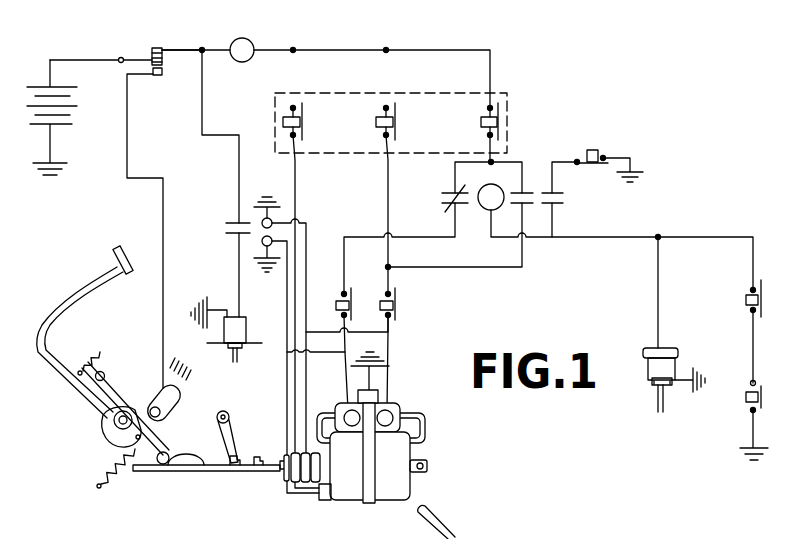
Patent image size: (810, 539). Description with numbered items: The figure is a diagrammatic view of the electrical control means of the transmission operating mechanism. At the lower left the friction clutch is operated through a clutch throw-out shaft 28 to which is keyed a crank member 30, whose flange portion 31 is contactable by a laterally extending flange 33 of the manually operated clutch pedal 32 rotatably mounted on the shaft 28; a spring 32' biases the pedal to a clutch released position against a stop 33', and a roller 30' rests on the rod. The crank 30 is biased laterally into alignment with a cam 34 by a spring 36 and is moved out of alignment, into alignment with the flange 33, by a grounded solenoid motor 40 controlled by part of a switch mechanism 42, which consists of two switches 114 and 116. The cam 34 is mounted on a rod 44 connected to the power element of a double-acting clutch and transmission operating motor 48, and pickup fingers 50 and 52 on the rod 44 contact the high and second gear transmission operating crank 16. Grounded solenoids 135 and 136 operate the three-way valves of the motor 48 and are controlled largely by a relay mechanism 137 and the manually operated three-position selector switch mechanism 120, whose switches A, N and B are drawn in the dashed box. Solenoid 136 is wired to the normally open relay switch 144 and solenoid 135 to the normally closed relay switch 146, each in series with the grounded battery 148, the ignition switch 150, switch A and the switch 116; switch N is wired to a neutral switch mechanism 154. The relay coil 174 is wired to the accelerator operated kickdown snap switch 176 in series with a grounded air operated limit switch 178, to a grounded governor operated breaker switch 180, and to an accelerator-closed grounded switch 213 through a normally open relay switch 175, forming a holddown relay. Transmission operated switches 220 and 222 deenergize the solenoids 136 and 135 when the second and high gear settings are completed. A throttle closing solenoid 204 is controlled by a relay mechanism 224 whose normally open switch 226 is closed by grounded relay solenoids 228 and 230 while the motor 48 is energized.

The grounded battery 148 is at (24, 88).
The breaker switch 116 is at (152, 50).
The switch mechanism 42 is at (170, 55).
The switch 114 is at (162, 73).
The ignition switch 150 is at (253, 40).
The selector switch mechanism 120 is at (432, 96).
The relay mechanism 137 is at (531, 183).
The grounded switch 213 is at (590, 150).
The normally closed switch 146 is at (446, 197).
The relay coil 174 is at (488, 203).
The normally open switch 144 is at (523, 200).
The normally open switch 175 is at (567, 200).
The normally open switch 226 is at (228, 229).
The relay mechanism 224 is at (250, 242).
The grounded relay solenoid 228 is at (272, 221).
The grounded relay solenoid 230 is at (272, 241).
The transmission operated switch 222 is at (337, 305).
The transmission operated switch 220 is at (404, 304).
The throttle closing solenoid 204 is at (221, 331).
The grounded solenoid motor 40 is at (182, 384).
The clutch pedal 32 is at (85, 332).
The spring 32' is at (100, 338).
The stop 33' is at (124, 355).
The laterally extending flange 33 is at (110, 387).
The crank member 30 is at (167, 424).
The flange portion 31 is at (101, 431).
The clutch throw-out shaft 28 is at (125, 430).
The spring 36 is at (119, 483).
The roller 30' is at (154, 474).
The rod 44 is at (195, 473).
The cam 34 is at (187, 462).
The pickup finger 50 is at (221, 471).
The pickup finger 52 is at (283, 470).
The transmission operating crank 16 is at (233, 418).
The clutch and transmission operating motor 48 is at (402, 486).
The grounded solenoid 135 is at (347, 415).
The grounded solenoid 136 is at (390, 413).
The neutral switch mechanism 154 is at (323, 500).
The governor operated breaker switch 180 is at (648, 366).
The kickdown snap switch 176 is at (748, 300).
The air operated limit switch 178 is at (745, 402).